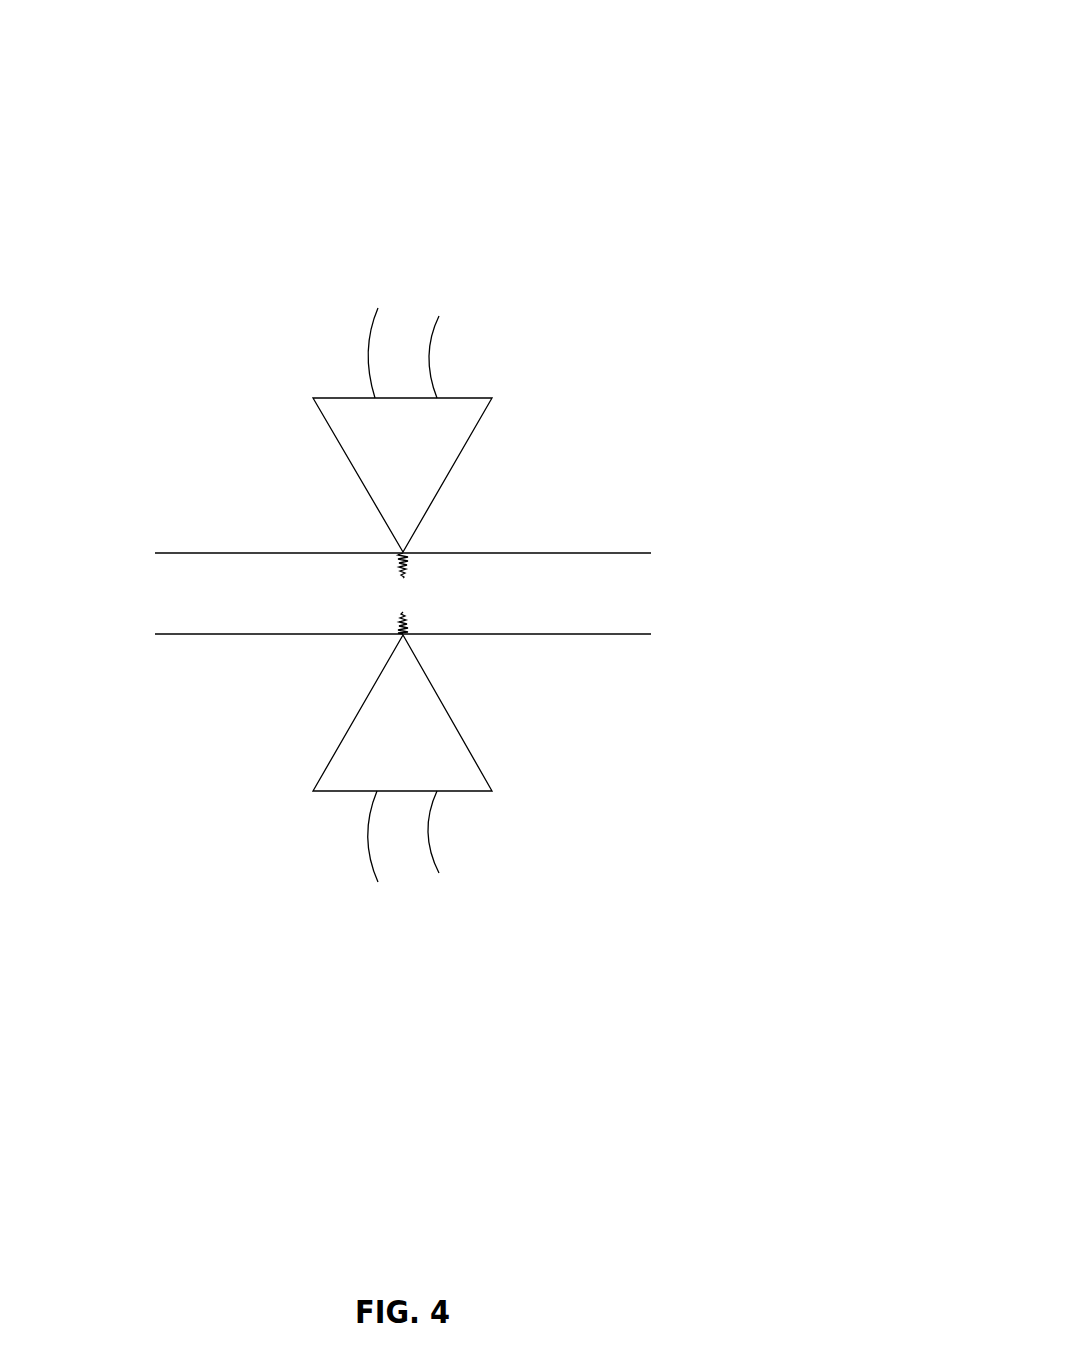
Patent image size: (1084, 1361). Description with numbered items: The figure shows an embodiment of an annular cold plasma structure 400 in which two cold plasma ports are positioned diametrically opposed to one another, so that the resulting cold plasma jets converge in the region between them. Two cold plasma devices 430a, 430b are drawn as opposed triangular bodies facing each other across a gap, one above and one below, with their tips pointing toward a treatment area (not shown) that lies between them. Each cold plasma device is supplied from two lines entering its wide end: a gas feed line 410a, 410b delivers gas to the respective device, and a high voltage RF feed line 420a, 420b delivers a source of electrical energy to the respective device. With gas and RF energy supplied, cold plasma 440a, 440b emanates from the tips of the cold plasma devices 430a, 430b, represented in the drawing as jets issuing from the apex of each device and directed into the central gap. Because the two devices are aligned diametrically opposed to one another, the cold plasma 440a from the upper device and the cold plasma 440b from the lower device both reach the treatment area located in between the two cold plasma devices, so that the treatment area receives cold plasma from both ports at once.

The optical coupling arrangement 400 is at (817, 21).
The gas feed line 410a is at (348, 318).
The high voltage RF feed line 420a is at (446, 349).
The cold plasma device 430a is at (458, 466).
The cold plasma 440a is at (412, 565).
The gas feed line 410b is at (348, 865).
The high voltage RF feed line 420b is at (446, 834).
The cold plasma device 430b is at (447, 712).
The cold plasma 440b is at (412, 622).